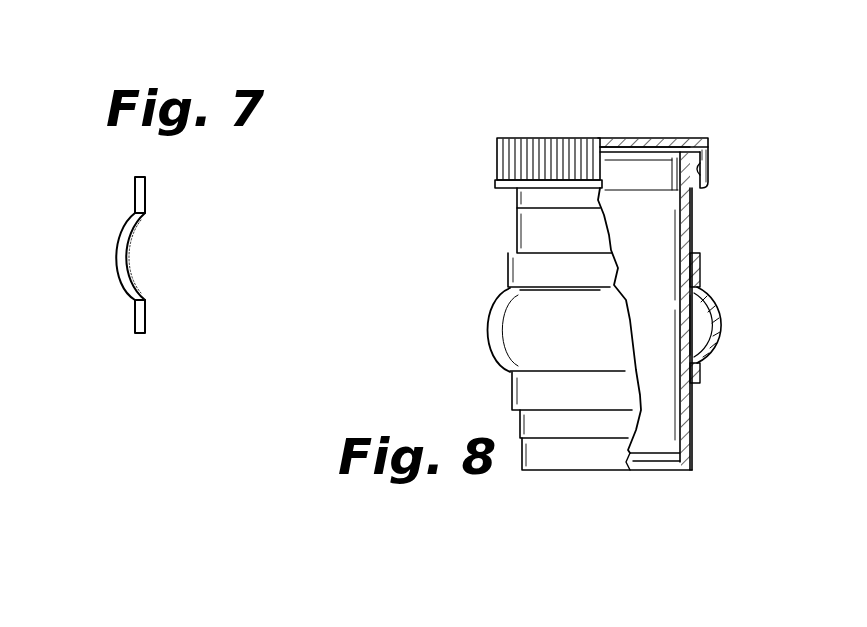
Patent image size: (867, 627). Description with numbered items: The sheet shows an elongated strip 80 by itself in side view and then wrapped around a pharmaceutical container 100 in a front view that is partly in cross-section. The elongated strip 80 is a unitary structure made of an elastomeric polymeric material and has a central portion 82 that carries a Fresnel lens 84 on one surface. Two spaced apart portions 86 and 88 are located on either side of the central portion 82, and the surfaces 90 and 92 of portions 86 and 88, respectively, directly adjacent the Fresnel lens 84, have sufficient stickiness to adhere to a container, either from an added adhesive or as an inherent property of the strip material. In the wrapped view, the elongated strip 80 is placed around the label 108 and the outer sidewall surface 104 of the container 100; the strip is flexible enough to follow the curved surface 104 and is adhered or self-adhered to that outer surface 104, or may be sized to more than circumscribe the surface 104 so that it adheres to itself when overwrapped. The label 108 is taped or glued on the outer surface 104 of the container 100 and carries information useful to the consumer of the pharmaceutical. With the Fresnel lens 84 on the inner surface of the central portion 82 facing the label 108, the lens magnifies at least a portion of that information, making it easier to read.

In FIG. 7, the elongated strip 80 is at (128, 258).
In FIG. 8, the elongated strip 80 is at (470, 293).
In FIG. 7, the central portion 82 is at (112, 283).
In FIG. 8, the central portion 82 is at (722, 316).
In FIG. 7, the Fresnel lens 84 is at (124, 245).
In FIG. 8, the Fresnel lens 84 is at (697, 304).
In FIG. 7, the spaced apart portion 86 is at (135, 197).
In FIG. 7, the spaced apart portion 88 is at (147, 323).
In FIG. 7, the surface 90 is at (146, 197).
In FIG. 7, the surface 92 is at (147, 313).
In FIG. 8, the container 100 is at (572, 272).
In FIG. 8, the outer sidewall surface 104 is at (515, 196).
In FIG. 8, the label 108 is at (518, 227).